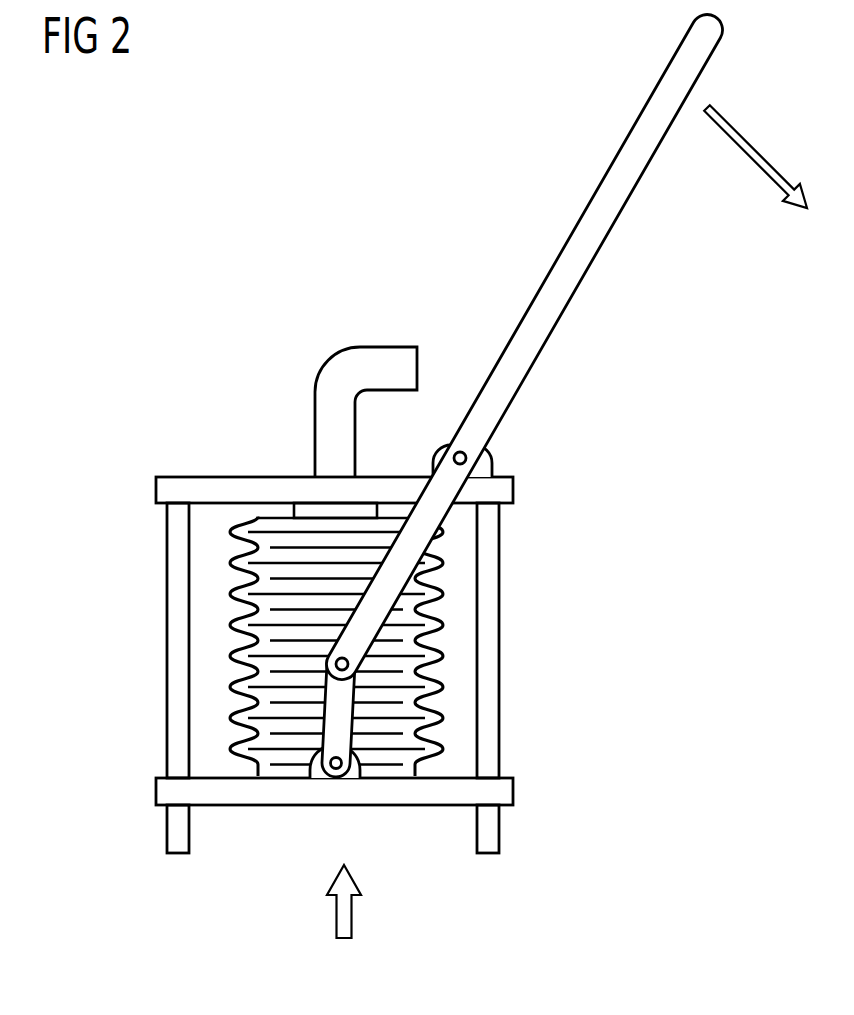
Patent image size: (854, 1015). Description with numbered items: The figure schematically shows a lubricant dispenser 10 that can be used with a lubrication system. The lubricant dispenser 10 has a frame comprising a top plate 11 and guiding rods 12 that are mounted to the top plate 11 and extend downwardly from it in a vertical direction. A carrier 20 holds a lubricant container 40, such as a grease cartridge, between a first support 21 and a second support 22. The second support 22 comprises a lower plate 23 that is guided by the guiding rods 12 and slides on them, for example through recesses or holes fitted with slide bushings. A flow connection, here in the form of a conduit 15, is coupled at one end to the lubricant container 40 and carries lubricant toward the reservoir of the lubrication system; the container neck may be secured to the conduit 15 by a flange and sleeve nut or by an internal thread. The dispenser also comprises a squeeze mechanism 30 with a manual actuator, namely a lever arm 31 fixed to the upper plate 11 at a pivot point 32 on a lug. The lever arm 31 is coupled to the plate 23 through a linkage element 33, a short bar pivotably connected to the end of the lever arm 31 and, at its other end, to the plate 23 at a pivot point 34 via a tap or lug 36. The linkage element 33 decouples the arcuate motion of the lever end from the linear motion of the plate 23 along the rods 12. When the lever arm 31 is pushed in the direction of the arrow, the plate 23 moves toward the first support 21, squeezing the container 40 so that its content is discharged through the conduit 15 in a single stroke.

The lubricant dispenser 10 is at (422, 481).
The top plate 11 is at (248, 488).
The guiding rods 12 is at (178, 665).
The conduit 15 is at (328, 380).
The carrier 20 is at (299, 639).
The first support 21 is at (309, 466).
The second support 22 is at (309, 815).
The plate 23 is at (408, 790).
The squeeze mechanism 30 is at (551, 437).
The lever arm 31 is at (570, 262).
The pivot point 32 is at (452, 438).
The linkage element 33 is at (340, 708).
The pivot point 34 is at (337, 770).
The tap or lug 36 is at (320, 773).
The lubricant container 40 is at (285, 738).